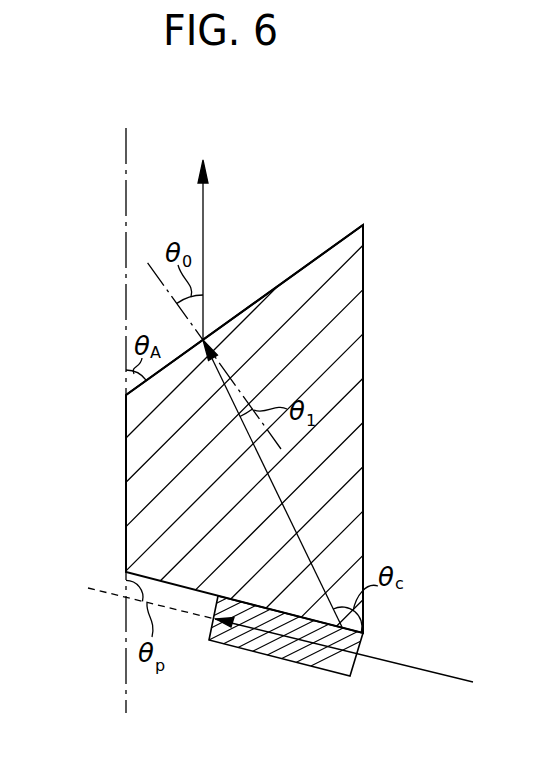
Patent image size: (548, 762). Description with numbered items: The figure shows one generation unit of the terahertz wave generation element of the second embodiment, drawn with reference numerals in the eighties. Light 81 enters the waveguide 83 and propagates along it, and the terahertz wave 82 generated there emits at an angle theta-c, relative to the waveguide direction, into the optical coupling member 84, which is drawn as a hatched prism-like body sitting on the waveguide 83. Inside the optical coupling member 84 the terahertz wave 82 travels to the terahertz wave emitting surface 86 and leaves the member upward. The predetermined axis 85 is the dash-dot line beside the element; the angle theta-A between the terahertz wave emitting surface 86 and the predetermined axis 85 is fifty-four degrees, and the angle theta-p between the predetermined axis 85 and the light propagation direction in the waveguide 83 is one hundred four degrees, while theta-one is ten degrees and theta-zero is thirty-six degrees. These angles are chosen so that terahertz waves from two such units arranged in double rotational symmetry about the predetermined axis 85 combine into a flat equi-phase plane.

The light 81 is at (417, 668).
The terahertz wave 82 is at (203, 195).
The waveguide 83 is at (285, 658).
The optical coupling member 84 is at (350, 361).
The predetermined axis 85 is at (126, 195).
The terahertz wave emitting surface 86 is at (325, 251).